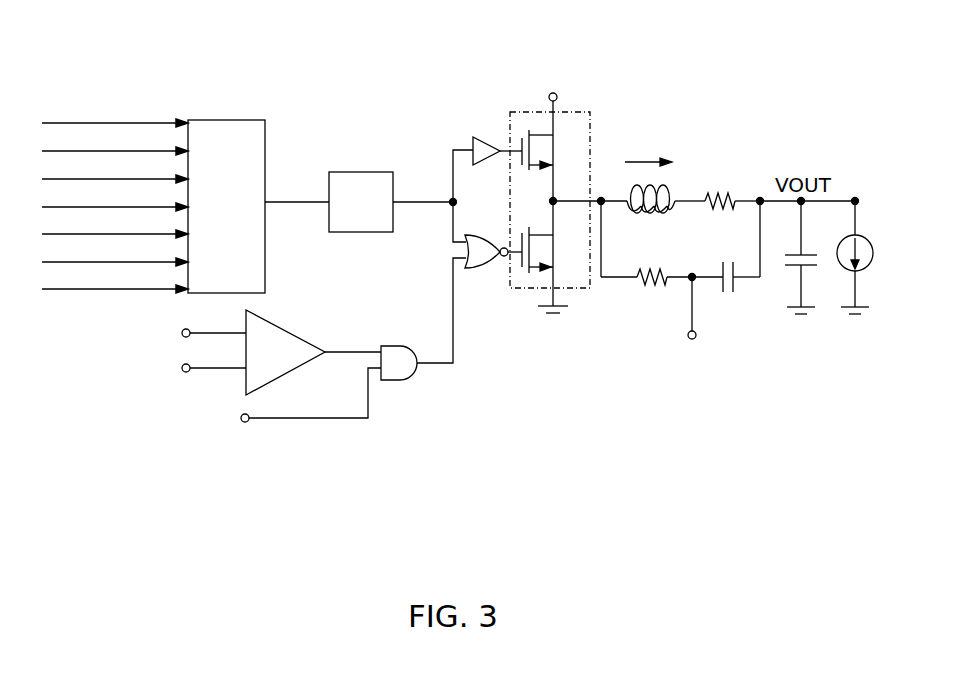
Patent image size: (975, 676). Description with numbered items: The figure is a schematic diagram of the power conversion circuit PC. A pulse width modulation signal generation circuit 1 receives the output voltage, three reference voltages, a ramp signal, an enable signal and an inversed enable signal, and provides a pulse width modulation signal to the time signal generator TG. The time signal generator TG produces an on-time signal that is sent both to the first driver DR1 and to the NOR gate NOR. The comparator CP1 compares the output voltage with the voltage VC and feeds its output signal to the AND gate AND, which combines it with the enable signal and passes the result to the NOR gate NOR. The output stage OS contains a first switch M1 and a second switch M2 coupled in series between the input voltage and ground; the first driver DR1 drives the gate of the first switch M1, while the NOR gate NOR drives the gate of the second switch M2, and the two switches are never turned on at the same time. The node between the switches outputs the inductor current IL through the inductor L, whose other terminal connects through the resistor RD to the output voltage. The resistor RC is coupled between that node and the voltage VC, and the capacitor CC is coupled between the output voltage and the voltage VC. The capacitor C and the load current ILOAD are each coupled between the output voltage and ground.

The power conversion circuit PC is at (38, 52).
The pulse width modulation signal generation circuit 1 is at (234, 214).
The time signal generator TG is at (376, 214).
The first driver DR1 is at (489, 157).
The NOR gate NOR is at (471, 282).
The output stage OS is at (590, 112).
The first switch M1 is at (553, 134).
The second switch M2 is at (553, 274).
The inductor L is at (651, 189).
The inductor current IL is at (648, 149).
The resistor RD is at (717, 187).
The resistor RC is at (662, 293).
The capacitor CC is at (737, 289).
The voltage VC is at (692, 318).
The capacitor C is at (796, 273).
The load current ILOAD is at (877, 273).
The comparator CP1 is at (300, 361).
The AND gate AND is at (282, 387).